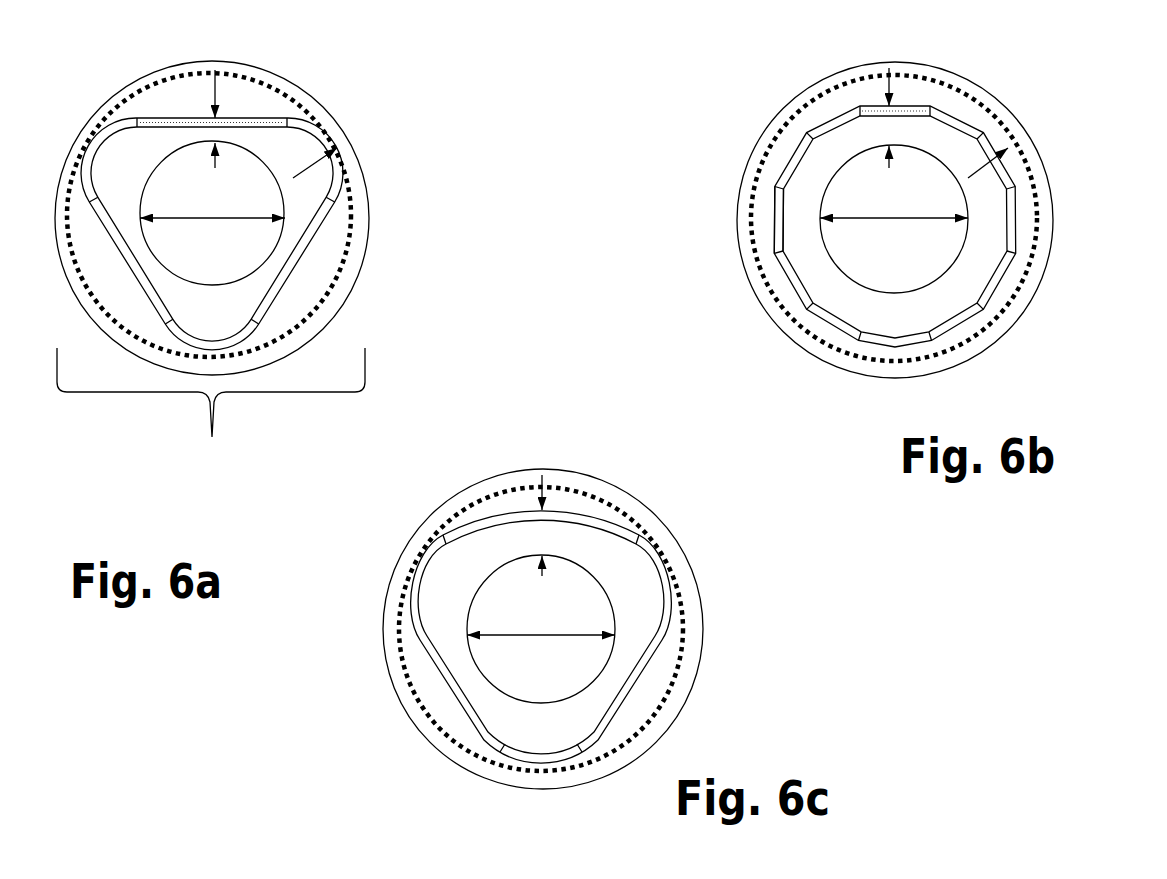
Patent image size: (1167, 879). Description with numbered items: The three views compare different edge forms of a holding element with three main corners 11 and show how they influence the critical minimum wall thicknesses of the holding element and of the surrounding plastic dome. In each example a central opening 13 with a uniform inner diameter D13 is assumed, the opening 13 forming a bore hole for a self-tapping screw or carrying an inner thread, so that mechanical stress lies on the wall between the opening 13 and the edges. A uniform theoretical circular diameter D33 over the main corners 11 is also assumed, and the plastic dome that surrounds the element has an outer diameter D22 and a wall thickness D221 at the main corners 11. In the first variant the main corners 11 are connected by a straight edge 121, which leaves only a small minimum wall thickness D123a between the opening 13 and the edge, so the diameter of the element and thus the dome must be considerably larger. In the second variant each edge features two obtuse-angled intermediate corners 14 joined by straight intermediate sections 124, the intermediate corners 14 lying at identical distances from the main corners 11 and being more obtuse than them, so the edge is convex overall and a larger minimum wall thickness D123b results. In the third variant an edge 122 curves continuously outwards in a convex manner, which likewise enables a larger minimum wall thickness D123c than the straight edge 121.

In FIG. 6a, the main corner 11 is at (347, 165).
In FIG. 6b, the main corner 11 is at (770, 148).
In FIG. 6c, the main corner 11 is at (665, 550).
In FIG. 6a, the opening 13 is at (212, 213).
In FIG. 6b, the opening 13 is at (894, 219).
In FIG. 6c, the opening 13 is at (541, 629).
In FIG. 6b, the intermediate corner 14 is at (778, 248).
In FIG. 6a, the straight edge 121 is at (300, 268).
In FIG. 6c, the continuously convex edge 122 is at (613, 523).
In FIG. 6b, the straight intermediate section 124 is at (770, 216).
In FIG. 6a, the inner diameter D13 is at (212, 235).
In FIG. 6b, the inner diameter D13 is at (894, 235).
In FIG. 6c, the inner diameter D13 is at (541, 652).
In FIG. 6a, the outer diameter of the plastic dome D22 is at (211, 413).
In FIG. 6a, the theoretical circular diameter over the main corners D33 is at (258, 78).
In FIG. 6b, the theoretical circular diameter over the main corners D33 is at (850, 78).
In FIG. 6c, the theoretical circular diameter over the main corners D33 is at (573, 484).
In FIG. 6a, the minimum wall thickness of the holding element (variant a) D123a is at (213, 137).
In FIG. 6b, the minimum wall thickness of the holding element (variant b) D123b is at (888, 138).
In FIG. 6c, the minimum wall thickness of the holding element (variant c) D123c is at (540, 545).
In FIG. 6a, the wall thickness of the plastic dome D221 is at (443, 78).
In FIG. 6b, the wall thickness of the plastic dome D221 is at (1120, 78).